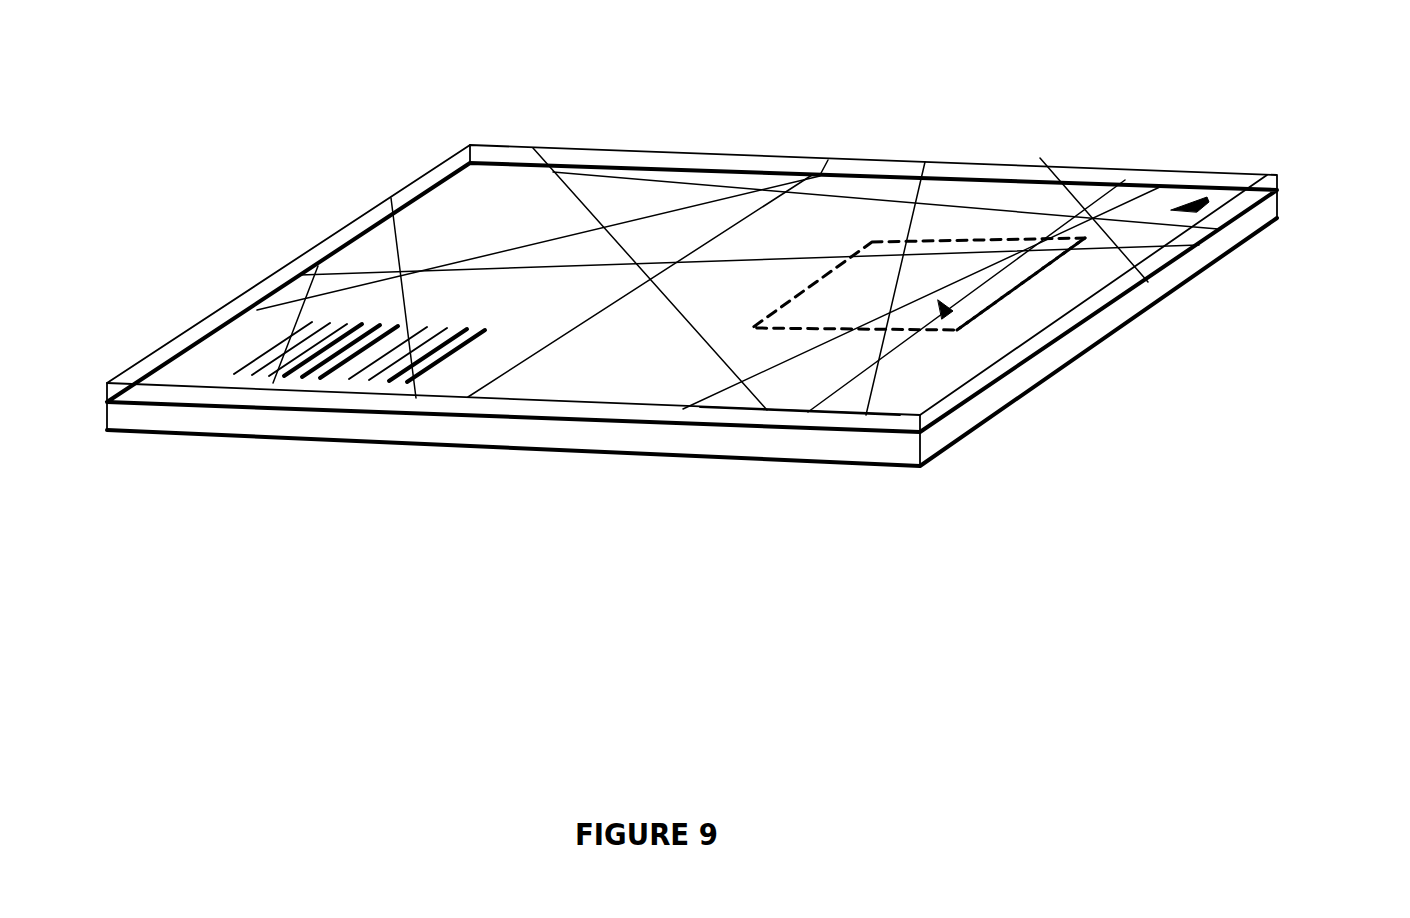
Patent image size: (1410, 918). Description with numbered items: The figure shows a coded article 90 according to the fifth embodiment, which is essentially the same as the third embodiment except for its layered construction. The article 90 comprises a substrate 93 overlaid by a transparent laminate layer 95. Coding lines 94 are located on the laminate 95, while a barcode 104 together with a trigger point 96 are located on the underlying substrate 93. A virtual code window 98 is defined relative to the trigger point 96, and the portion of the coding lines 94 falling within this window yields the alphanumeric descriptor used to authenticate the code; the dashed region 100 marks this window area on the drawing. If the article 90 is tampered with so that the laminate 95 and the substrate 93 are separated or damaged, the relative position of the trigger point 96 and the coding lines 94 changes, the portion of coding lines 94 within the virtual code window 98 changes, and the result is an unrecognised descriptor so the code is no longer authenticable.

The article 90 is at (217, 113).
The substrate 93 is at (527, 440).
The coding lines 94 is at (1172, 187).
The transparent laminate layer 95 is at (793, 425).
The trigger point 96 is at (1203, 212).
The virtual code window 98 is at (1038, 268).
The light ray path region 100 is at (946, 312).
The barcode 104 is at (363, 367).